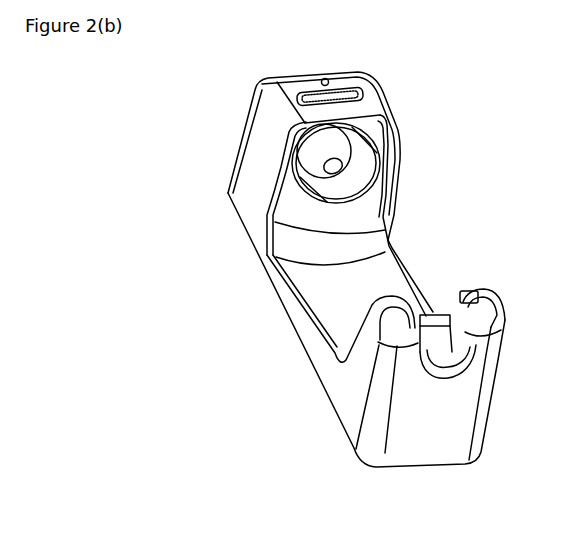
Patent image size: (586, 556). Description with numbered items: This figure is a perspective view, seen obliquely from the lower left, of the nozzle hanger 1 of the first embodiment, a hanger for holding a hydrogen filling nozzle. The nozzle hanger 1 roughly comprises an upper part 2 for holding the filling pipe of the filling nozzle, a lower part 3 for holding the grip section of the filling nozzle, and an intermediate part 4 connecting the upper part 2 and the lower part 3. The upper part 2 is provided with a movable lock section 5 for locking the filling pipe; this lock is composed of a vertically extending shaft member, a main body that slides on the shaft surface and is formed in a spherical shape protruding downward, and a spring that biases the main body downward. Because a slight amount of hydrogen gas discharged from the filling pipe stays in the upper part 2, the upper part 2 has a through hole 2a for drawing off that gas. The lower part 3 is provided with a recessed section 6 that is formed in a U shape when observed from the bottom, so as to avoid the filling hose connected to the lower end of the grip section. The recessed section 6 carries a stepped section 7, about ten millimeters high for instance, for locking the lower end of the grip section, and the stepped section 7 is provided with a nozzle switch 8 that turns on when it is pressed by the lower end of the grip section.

The nozzle hanger 1 is at (490, 91).
The upper part 2 is at (238, 140).
The through hole 2a is at (331, 78).
The lower part 3 is at (425, 437).
The intermediate part 4 is at (288, 315).
The movable lock section 5 is at (349, 176).
The recessed section 6 is at (446, 355).
The stepped section 7 is at (462, 290).
The nozzle switch 8 is at (446, 315).